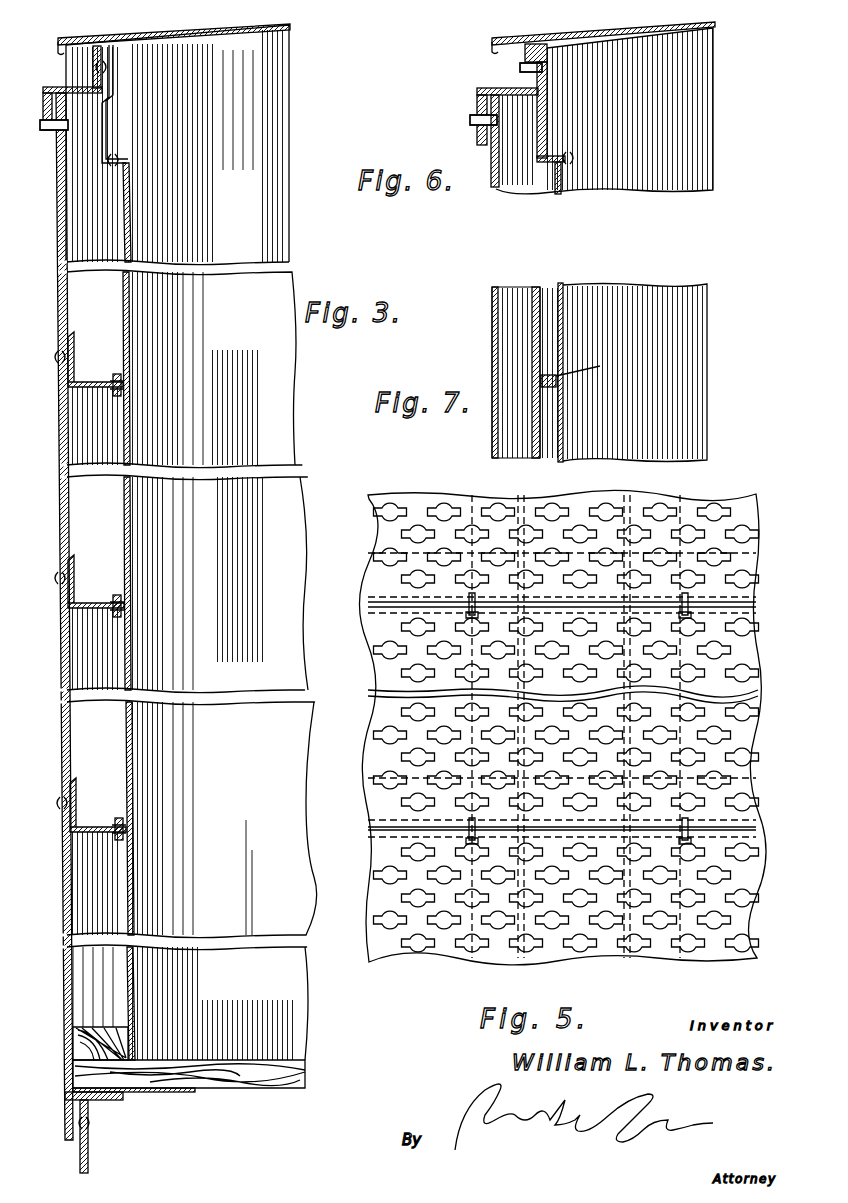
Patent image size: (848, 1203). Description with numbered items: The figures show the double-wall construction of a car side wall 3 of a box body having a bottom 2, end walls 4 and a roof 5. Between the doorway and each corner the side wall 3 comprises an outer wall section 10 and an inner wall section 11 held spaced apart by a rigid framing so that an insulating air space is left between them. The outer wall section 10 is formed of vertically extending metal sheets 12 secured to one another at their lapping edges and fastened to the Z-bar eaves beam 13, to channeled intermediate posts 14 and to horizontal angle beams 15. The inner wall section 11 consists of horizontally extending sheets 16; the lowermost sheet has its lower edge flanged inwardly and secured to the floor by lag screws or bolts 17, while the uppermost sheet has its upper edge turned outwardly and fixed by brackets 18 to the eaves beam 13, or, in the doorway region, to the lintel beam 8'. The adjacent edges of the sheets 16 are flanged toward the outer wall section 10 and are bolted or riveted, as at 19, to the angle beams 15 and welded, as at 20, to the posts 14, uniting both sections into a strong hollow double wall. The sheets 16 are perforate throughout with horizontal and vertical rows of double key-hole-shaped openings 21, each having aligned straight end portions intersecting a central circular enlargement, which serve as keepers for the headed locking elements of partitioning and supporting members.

In FIG. 3, the bottom 2 is at (222, 1082).
In FIG. 3, the side wall 3 is at (60, 505).
In FIG. 7, the side wall 3 is at (490, 352).
In FIG. 3, the end wall 4 is at (275, 412).
In FIG. 6, the end wall 4 is at (695, 118).
In FIG. 7, the end wall 4 is at (680, 370).
In FIG. 3, the roof 5 is at (192, 36).
In FIG. 6, the roof 5 is at (616, 32).
In FIG. 6, the lintel beam 8' is at (582, 112).
In FIG. 3, the outer wall section 10 is at (60, 256).
In FIG. 6, the outer wall section 10 is at (490, 173).
In FIG. 7, the outer wall section 10 is at (490, 320).
In FIG. 3, the inner wall section 11 is at (133, 236).
In FIG. 6, the inner wall section 11 is at (560, 196).
In FIG. 7, the inner wall section 11 is at (566, 440).
In FIG. 3, the metal sheets 12 is at (62, 412).
In FIG. 3, the eaves beam 13 is at (54, 88).
In FIG. 6, the eaves beam 13 is at (514, 87).
In FIG. 7, the intermediate post 14 is at (522, 306).
In FIG. 5, the intermediate post 14 is at (525, 506).
In FIG. 3, the angle beam 15 is at (88, 380).
In FIG. 5, the angle beam 15 is at (385, 572).
In FIG. 3, the sheets 16 is at (130, 325).
In FIG. 6, the sheets 16 is at (563, 186).
In FIG. 7, the sheets 16 is at (563, 300).
In FIG. 5, the sheets 16 is at (396, 606).
In FIG. 3, the lag screws or bolts 17 is at (138, 1045).
In FIG. 3, the brackets 18 is at (97, 138).
In FIG. 7, the bolts or rivets 19 is at (581, 371).
In FIG. 5, the bolts or rivets 19 is at (469, 598).
In FIG. 5, the welds 20 is at (570, 590).
In FIG. 5, the slots or openings 21 is at (608, 510).